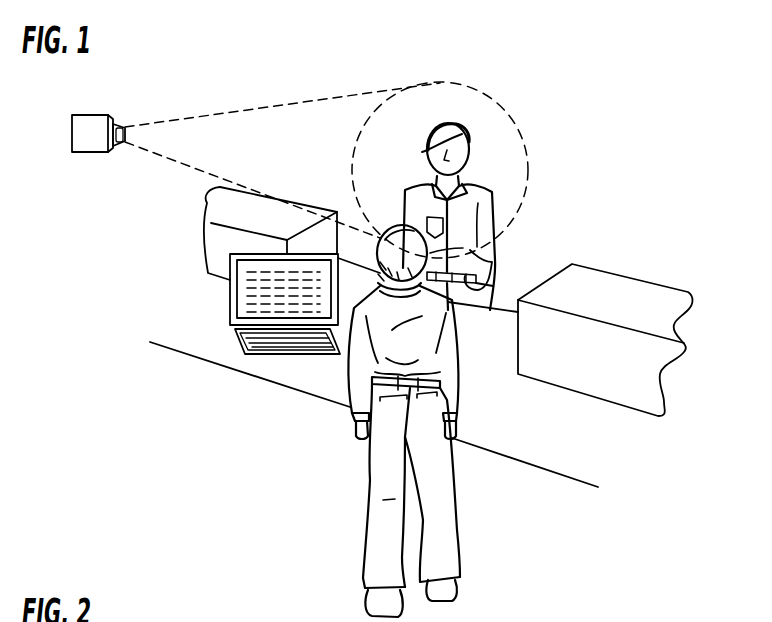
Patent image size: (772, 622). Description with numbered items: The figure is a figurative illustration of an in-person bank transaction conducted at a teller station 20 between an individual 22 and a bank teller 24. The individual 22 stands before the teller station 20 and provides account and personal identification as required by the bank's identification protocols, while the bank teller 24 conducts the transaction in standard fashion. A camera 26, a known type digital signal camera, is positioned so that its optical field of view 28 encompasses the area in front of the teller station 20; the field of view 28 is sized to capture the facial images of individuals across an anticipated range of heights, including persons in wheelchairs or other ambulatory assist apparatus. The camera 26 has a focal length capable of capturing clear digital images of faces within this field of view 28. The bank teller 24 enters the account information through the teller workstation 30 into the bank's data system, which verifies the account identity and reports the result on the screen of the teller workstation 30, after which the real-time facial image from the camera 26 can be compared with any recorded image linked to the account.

The teller station 20 is at (598, 153).
The individual 22 is at (450, 123).
The bank teller 24 is at (372, 440).
The camera 26 is at (95, 127).
The optical field of view 28 is at (355, 162).
The teller workstation 30 is at (230, 297).